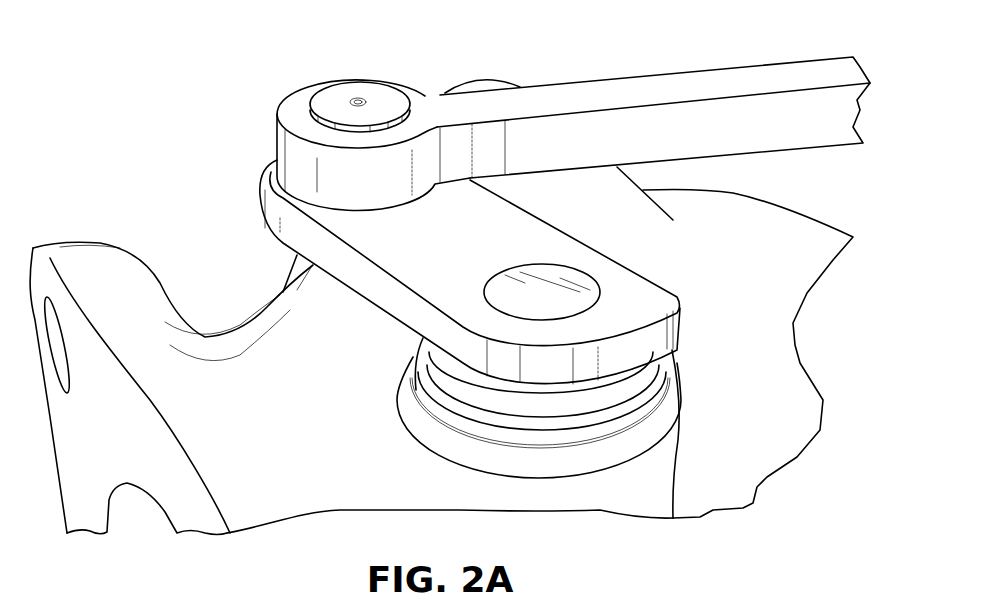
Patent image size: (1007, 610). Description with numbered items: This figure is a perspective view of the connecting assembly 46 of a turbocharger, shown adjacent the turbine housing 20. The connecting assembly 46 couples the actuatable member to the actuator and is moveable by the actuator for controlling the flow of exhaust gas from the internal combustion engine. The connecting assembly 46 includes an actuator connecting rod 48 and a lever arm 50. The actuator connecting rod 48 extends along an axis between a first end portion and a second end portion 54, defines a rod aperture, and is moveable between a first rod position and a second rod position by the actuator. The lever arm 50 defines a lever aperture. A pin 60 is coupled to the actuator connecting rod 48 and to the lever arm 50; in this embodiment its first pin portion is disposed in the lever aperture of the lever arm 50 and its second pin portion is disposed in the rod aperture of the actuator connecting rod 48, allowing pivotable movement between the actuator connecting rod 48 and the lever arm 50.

The turbine housing 20 is at (100, 262).
The connecting assembly 46 is at (546, 106).
The actuator connecting rod 48 is at (750, 80).
The lever arm 50 is at (402, 258).
The second end portion 54 is at (502, 98).
The pin 60 is at (377, 90).